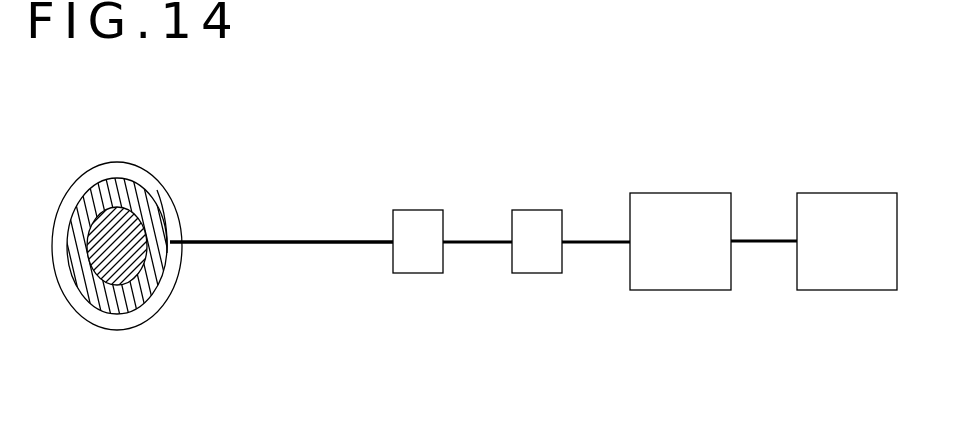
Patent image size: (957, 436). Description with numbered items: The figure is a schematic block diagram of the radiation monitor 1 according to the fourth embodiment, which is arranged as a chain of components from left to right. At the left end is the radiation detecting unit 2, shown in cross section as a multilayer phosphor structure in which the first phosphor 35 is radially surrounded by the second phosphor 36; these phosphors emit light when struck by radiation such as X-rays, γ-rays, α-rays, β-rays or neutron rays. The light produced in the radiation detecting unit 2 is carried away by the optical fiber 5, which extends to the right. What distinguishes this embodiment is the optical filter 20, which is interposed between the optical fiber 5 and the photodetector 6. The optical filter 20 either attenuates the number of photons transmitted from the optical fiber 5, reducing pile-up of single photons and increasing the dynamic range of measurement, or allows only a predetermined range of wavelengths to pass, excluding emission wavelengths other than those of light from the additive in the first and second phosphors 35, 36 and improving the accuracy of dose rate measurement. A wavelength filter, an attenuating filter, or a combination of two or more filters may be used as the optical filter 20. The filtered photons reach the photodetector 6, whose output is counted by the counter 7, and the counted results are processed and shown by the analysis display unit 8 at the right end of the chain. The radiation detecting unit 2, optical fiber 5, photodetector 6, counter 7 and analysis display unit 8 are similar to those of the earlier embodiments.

The radiation monitor 1 is at (250, 148).
The radiation detecting unit 2 is at (111, 162).
The optical fiber 5 is at (303, 240).
The photodetector 6 is at (532, 242).
The counter 7 is at (667, 217).
The analysis display unit 8 is at (842, 217).
The optical filter 20 is at (415, 240).
The first phosphor 35 is at (100, 262).
The second phosphor 36 is at (131, 286).